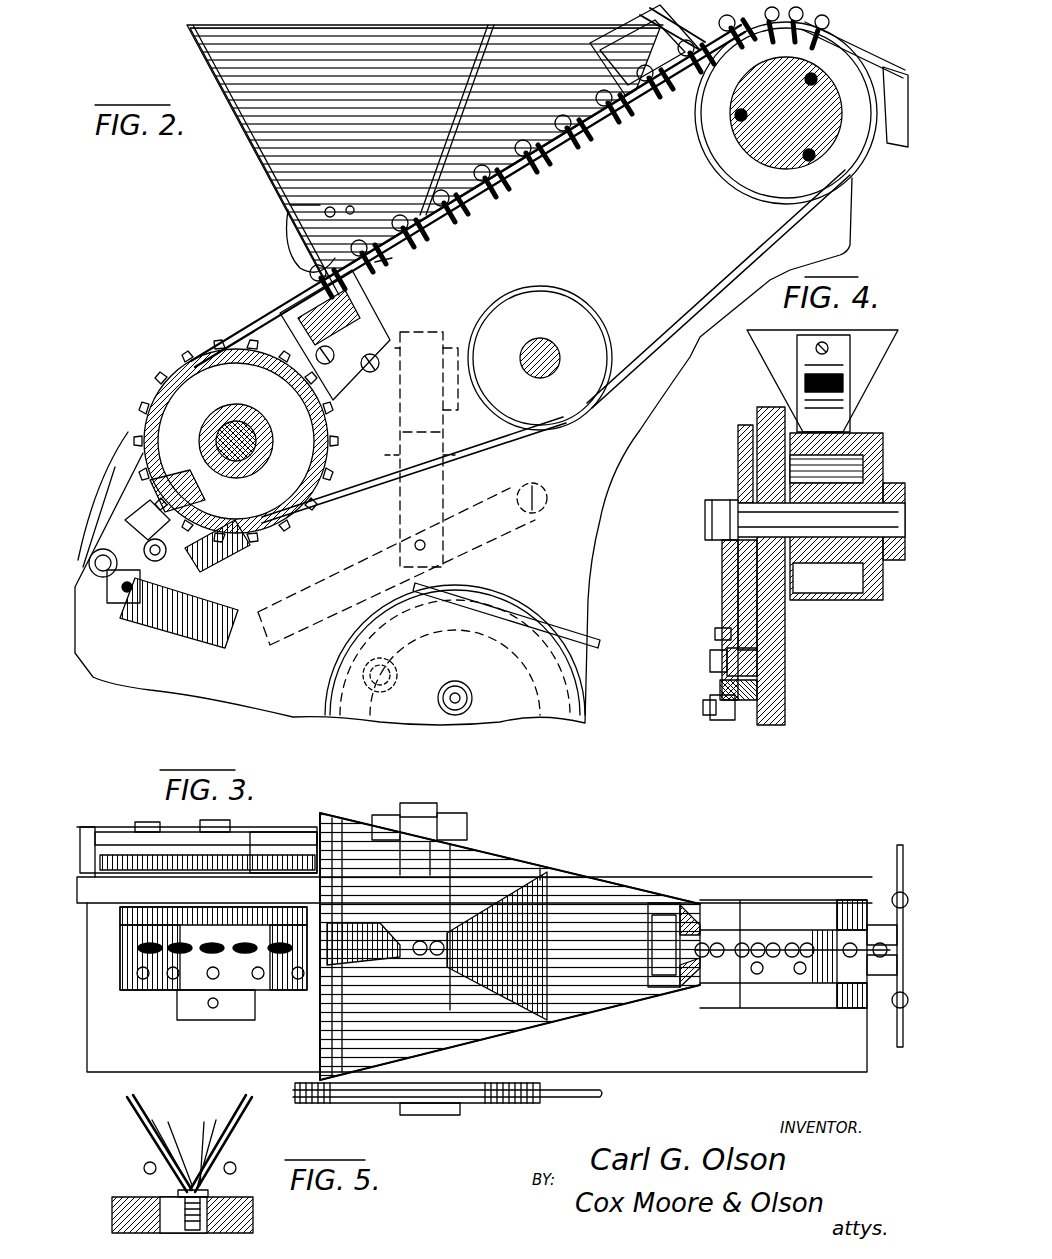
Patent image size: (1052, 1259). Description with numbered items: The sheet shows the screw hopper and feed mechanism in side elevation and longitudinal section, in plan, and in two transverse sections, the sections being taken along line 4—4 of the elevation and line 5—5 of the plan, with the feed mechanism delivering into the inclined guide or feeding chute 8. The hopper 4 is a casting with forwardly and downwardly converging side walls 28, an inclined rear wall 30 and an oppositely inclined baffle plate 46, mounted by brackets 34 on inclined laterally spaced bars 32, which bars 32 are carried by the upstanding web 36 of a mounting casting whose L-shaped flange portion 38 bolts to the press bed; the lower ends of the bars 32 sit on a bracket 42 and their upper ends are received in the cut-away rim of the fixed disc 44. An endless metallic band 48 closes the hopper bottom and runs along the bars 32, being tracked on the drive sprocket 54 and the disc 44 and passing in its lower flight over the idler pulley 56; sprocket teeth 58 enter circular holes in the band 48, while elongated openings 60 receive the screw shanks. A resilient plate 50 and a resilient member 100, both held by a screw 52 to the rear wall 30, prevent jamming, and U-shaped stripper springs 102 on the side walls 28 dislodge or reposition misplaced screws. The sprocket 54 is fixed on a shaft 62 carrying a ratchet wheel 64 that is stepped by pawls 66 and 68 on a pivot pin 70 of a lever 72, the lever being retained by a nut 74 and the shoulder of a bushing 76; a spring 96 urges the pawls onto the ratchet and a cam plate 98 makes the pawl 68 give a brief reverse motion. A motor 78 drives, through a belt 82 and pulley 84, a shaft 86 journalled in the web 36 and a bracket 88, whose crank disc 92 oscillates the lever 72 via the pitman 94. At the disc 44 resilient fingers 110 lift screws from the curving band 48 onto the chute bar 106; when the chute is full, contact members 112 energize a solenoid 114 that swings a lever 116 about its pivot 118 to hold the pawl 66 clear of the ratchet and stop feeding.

In FIG. 2, the hopper 4 is at (690, 34).
In FIG. 3, the section line 5- 5 is at (648, 865).
In FIG. 3, the inclined guide or feeding chute 8 is at (420, 1110).
In FIG. 3, the side walls 28 is at (465, 850).
In FIG. 2, the inclined rear wall 30 is at (250, 125).
In FIG. 4, the inclined rear wall 30 is at (778, 362).
In FIG. 3, the inclined rear wall 30 is at (310, 1005).
In FIG. 5, the inclined rear wall 30 is at (140, 1108).
In FIG. 2, the bars 32 is at (556, 346).
In FIG. 3, the bars 32 is at (728, 900).
In FIG. 5, the bars 32 is at (112, 1225).
In FIG. 5, the brackets 34 is at (145, 1150).
In FIG. 2, the upstanding web 36 is at (463, 451).
In FIG. 4, the upstanding web 36 is at (787, 645).
In FIG. 3, the upstanding web 36 is at (100, 905).
In FIG. 5, the upstanding web 36 is at (140, 1200).
In FIG. 2, the L-shaped laterally extending flange portion 38 is at (380, 265).
In FIG. 2, the bracket 42 is at (358, 310).
In FIG. 2, the disc or discs 44 is at (735, 162).
In FIG. 2, the baffle wall or plate 46 is at (405, 75).
In FIG. 2, the endless band or tape 48 is at (528, 192).
In FIG. 4, the endless band or tape 48 is at (808, 600).
In FIG. 2, the resilient plate 50 is at (335, 207).
In FIG. 2, the screw 52 is at (290, 212).
In FIG. 2, the drive pulley or sprocket 54 is at (325, 445).
In FIG. 4, the drive pulley or sprocket 54 is at (882, 590).
In FIG. 2, the idler pulley 56 is at (585, 310).
In FIG. 2, the sprocket teeth 58 is at (232, 325).
In FIG. 4, the sprocket teeth 58 is at (847, 432).
In FIG. 3, the sprocket teeth 58 is at (175, 992).
In FIG. 3, the apertures or openings 60 is at (242, 945).
In FIG. 2, the shaft 62 is at (190, 428).
In FIG. 4, the shaft 62 is at (828, 578).
In FIG. 3, the shaft 62 is at (213, 1022).
In FIG. 4, the ratchet wheel 64 is at (741, 445).
In FIG. 3, the ratchet wheel 64 is at (283, 858).
In FIG. 2, the pawl 66 is at (140, 545).
In FIG. 4, the pawl 66 is at (722, 660).
In FIG. 2, the pawl 68 is at (190, 556).
In FIG. 4, the pawl 68 is at (765, 675).
In FIG. 2, the pivot pin 70 is at (145, 548).
In FIG. 4, the pivot pin 70 is at (722, 655).
In FIG. 3, the pivot pin 70 is at (148, 825).
In FIG. 2, the lever 72 is at (150, 470).
In FIG. 3, the lever 72 is at (122, 827).
In FIG. 4, the nut 74 is at (718, 516).
In FIG. 3, the nut 74 is at (225, 828).
In FIG. 4, the bushing 76 is at (726, 500).
In FIG. 4, the electric motor or prime mover 78 is at (722, 568).
In FIG. 2, the belt 82 is at (598, 636).
In FIG. 3, the belt 82 is at (592, 1097).
In FIG. 3, the pulley 84 is at (520, 1100).
In FIG. 2, the shaft 86 is at (458, 688).
In FIG. 3, the bracket 88 is at (318, 1058).
In FIG. 3, the disc or crank 92 is at (508, 862).
In FIG. 2, the link or pitman 94 is at (200, 640).
In FIG. 4, the link or pitman 94 is at (715, 712).
In FIG. 3, the link or pitman 94 is at (280, 830).
In FIG. 2, the spring 96 is at (140, 505).
In FIG. 4, the spring 96 is at (717, 632).
In FIG. 2, the cam plate 98 is at (140, 638).
In FIG. 3, the cam plate 98 is at (81, 827).
In FIG. 2, the resilient member 100 is at (294, 263).
In FIG. 4, the resilient member 100 is at (800, 387).
In FIG. 2, the stripper springs 102 is at (655, 60).
In FIG. 3, the stripper springs 102 is at (660, 895).
In FIG. 5, the stripper springs 102 is at (205, 1118).
In FIG. 2, the bar 106 is at (893, 156).
In FIG. 2, the resilient strips or fingers 110 is at (893, 55).
In FIG. 3, the resilient strips or fingers 110 is at (830, 983).
In FIG. 3, the contact members 112 is at (895, 895).
In FIG. 2, the solenoid 114 is at (455, 310).
In FIG. 3, the solenoid 114 is at (475, 793).
In FIG. 2, the lever 116 is at (358, 530).
In FIG. 2, the pivot 118 is at (530, 490).